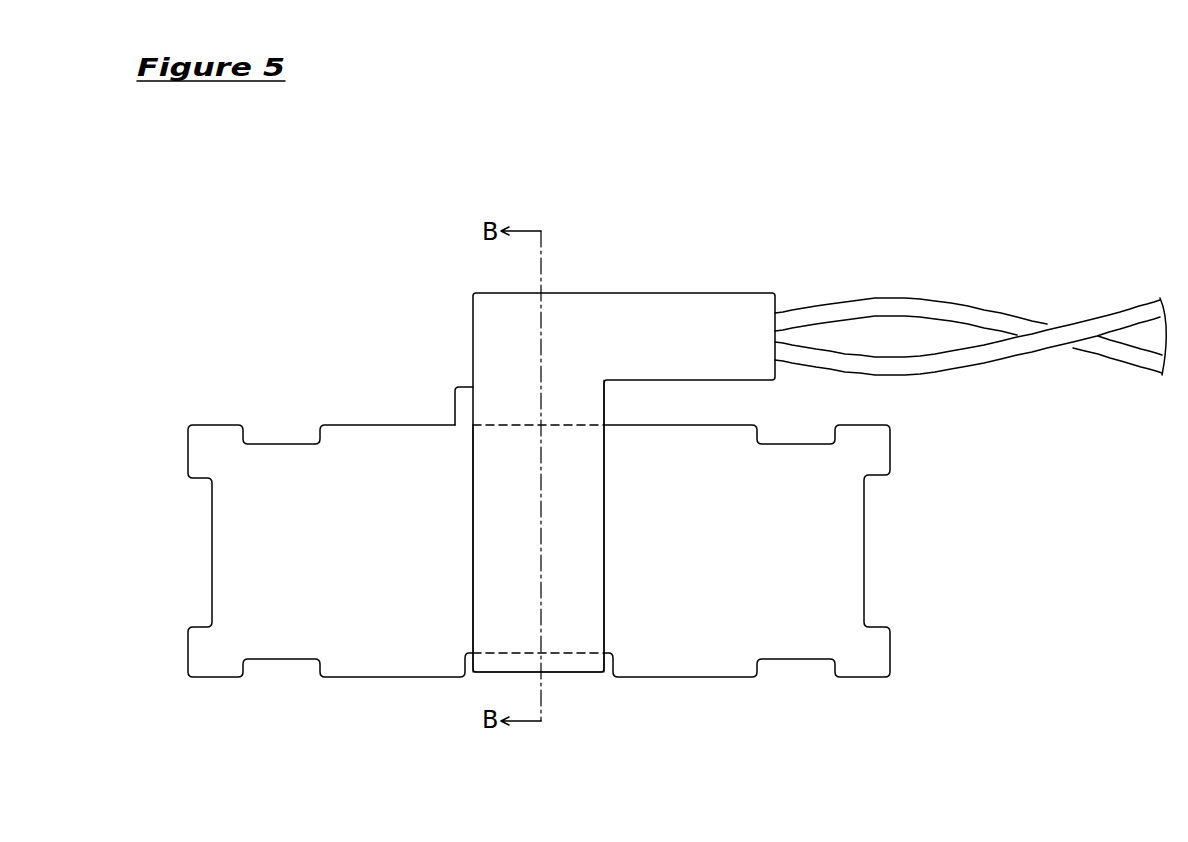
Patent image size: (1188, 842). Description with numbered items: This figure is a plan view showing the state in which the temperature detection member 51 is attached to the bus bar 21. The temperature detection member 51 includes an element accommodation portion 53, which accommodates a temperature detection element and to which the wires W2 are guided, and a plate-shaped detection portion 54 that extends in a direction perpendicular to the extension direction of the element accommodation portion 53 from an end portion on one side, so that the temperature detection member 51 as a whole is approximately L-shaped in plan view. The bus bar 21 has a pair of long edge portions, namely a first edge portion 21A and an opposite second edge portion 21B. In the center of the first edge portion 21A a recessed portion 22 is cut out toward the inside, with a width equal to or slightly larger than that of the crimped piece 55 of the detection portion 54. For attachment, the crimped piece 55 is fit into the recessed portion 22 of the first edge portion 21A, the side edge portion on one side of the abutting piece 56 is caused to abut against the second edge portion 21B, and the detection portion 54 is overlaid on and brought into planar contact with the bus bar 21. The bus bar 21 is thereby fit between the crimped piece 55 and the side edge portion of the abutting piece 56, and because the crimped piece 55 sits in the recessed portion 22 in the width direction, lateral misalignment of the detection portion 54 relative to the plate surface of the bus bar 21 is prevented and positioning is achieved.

The bus bar 21 is at (539, 564).
The first edge portion 21A is at (662, 678).
The second edge portion 21B is at (367, 425).
The recessed portion 22 is at (584, 653).
The temperature detection member 51 is at (561, 476).
The element accommodation portion 53 is at (648, 310).
The detection portion 54 is at (485, 542).
The crimped piece 55 is at (560, 662).
The abutting piece 56 is at (455, 408).
The wires W2 is at (953, 360).